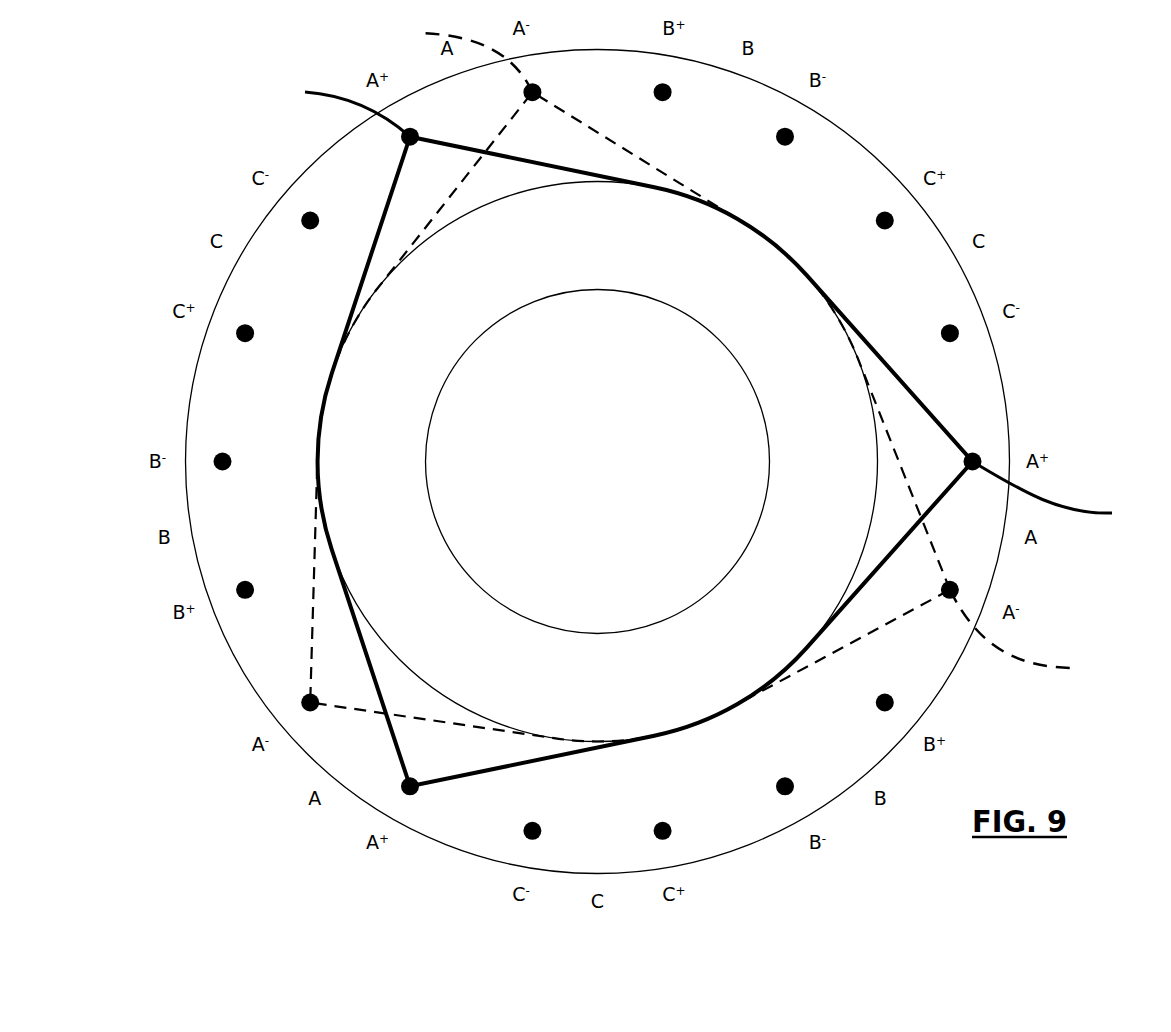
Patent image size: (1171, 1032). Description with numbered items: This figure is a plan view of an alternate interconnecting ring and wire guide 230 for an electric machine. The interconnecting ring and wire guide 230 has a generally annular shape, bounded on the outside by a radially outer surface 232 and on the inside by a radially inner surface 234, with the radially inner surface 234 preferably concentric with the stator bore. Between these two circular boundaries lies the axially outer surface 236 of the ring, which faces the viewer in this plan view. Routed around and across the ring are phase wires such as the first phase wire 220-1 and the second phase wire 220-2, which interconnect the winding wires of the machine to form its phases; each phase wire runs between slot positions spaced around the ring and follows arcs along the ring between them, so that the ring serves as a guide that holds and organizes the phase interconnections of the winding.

The phase wire 220-1 is at (361, 285).
The phase wire 220-2 is at (612, 139).
The interconnecting ring and wire guide 230 is at (738, 247).
The radially outer surface 232 is at (502, 200).
The radially inner surface 234 is at (545, 302).
The axially outer surface 236 is at (445, 339).